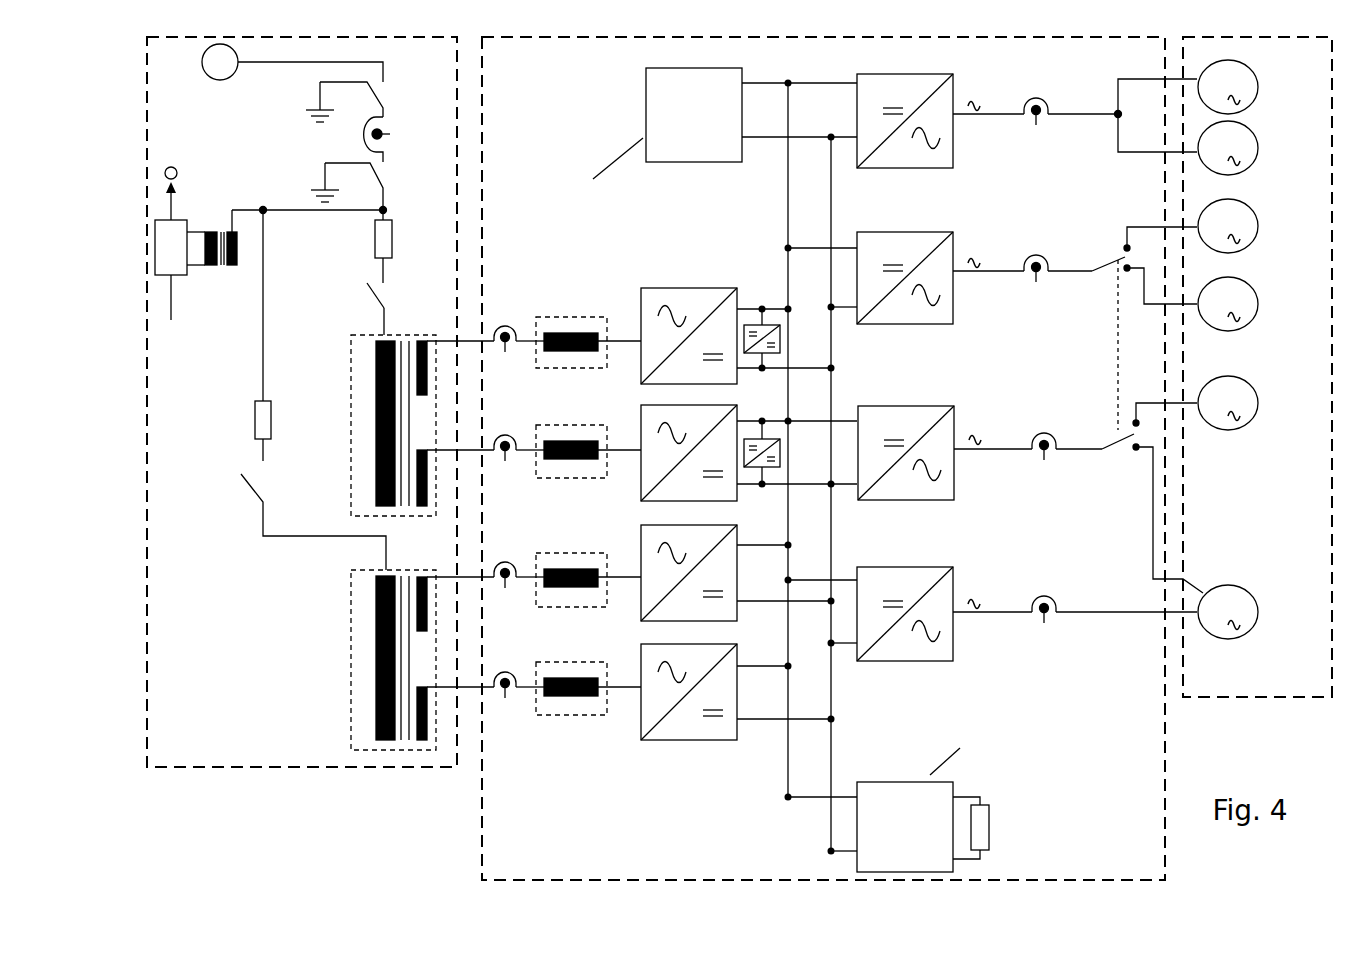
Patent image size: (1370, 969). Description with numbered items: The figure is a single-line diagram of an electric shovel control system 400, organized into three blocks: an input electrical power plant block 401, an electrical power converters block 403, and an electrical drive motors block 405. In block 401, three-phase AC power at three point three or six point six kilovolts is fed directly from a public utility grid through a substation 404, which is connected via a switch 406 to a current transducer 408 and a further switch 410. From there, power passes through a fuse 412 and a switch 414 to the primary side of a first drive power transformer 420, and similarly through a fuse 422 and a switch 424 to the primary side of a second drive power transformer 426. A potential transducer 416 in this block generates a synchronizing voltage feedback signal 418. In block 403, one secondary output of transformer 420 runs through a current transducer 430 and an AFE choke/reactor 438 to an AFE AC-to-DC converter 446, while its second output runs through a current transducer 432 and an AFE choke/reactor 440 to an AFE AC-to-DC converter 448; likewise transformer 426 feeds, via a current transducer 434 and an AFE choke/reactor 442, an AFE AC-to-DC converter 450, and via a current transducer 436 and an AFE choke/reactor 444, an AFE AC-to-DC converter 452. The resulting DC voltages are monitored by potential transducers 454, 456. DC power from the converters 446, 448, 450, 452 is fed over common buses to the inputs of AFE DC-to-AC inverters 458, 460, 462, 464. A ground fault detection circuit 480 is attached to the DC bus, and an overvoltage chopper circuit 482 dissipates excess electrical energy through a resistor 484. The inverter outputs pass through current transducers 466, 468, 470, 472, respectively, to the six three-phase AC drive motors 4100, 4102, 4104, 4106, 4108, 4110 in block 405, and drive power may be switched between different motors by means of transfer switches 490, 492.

The electric shovel control system 400 is at (1203, 741).
The input electrical power plant block 401 is at (302, 402).
The electrical power converters block 403 is at (823, 458).
The electrical drive motors block 405 is at (1257, 367).
The substation 404 is at (292, 73).
The switch 406 is at (362, 102).
The current transducer 408 is at (399, 139).
The switch 410 is at (364, 186).
The fuse 412 is at (404, 246).
The switch 414 is at (396, 309).
The potential transducer 416 is at (196, 265).
The synchronizing voltage feedback signal 418 is at (172, 183).
The drive power transformer 420 is at (400, 425).
The fuse 422 is at (243, 335).
The switch 424 is at (313, 522).
The drive power transformer 426 is at (398, 660).
The current transducer 430 is at (517, 350).
The current transducer 432 is at (517, 458).
The current transducer 434 is at (517, 586).
The current transducer 436 is at (516, 695).
The AFE choke/reactor 438 is at (588, 330).
The AFE choke/reactor 440 is at (588, 440).
The AFE choke/reactor 442 is at (588, 569).
The AFE choke/reactor 444 is at (588, 676).
The AFE AC-to-DC converter 446 is at (689, 325).
The AFE AC-to-DC converter 448 is at (643, 413).
The AFE AC-to-DC converter 450 is at (643, 543).
The AFE AC-to-DC converter 452 is at (689, 705).
The potential transducer 454 is at (780, 337).
The potential transducer 456 is at (780, 452).
The AFE DC-to-AC inverter 458 is at (940, 121).
The AFE DC-to-AC inverter 460 is at (940, 279).
The AFE DC-to-AC inverter 462 is at (945, 453).
The AFE DC-to-AC inverter 464 is at (944, 615).
The current transducer 466 is at (1069, 99).
The current transducer 468 is at (1056, 257).
The current transducer 470 is at (1065, 435).
The current transducer 472 is at (1109, 598).
The ground fault detection circuit 480 is at (624, 147).
The overvoltage chopper circuit 482 is at (949, 788).
The resistor 484 is at (988, 828).
The transfer switch 490 is at (1143, 328).
The transfer switch 492 is at (1152, 498).
The motor 4100 is at (1246, 83).
The motor 4102 is at (1246, 146).
The motor 4104 is at (1246, 222).
The motor 4106 is at (1246, 301).
The motor 4108 is at (1246, 399).
The motor 4110 is at (1246, 608).